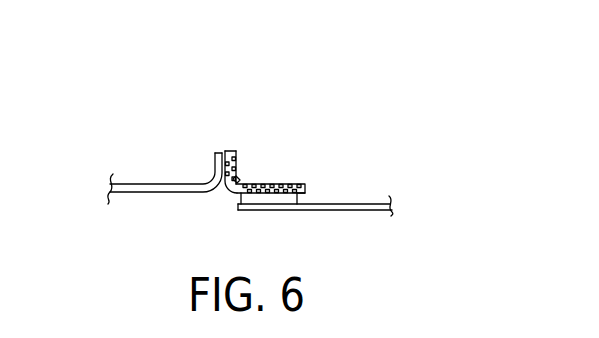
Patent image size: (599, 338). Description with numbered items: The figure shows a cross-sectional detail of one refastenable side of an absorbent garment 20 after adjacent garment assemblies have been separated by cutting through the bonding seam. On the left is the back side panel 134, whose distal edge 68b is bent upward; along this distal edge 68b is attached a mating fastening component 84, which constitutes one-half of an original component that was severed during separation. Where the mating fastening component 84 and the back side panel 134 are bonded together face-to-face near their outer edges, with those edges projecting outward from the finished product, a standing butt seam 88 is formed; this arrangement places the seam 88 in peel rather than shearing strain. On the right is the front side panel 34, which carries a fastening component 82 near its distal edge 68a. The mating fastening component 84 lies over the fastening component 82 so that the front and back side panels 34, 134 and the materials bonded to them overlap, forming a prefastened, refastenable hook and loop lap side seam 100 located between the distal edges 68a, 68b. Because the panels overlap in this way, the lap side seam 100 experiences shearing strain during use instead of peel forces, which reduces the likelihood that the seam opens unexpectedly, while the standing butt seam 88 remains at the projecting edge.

The absorbent garment 20 is at (262, 84).
The front side panel 34 is at (362, 203).
The back side panel 134 is at (145, 185).
The distal edge 68a is at (238, 211).
The distal edge 68b is at (220, 152).
The fastening component 82 is at (303, 201).
The mating fastening component 84 is at (277, 184).
The standing butt seam 88 is at (232, 145).
The lap side seam 100 is at (320, 179).